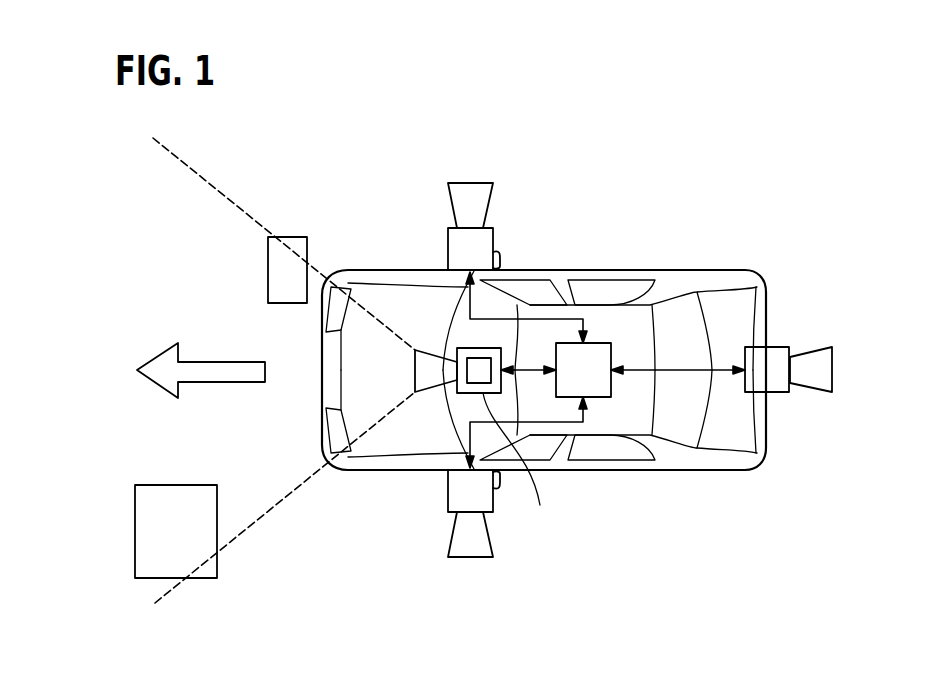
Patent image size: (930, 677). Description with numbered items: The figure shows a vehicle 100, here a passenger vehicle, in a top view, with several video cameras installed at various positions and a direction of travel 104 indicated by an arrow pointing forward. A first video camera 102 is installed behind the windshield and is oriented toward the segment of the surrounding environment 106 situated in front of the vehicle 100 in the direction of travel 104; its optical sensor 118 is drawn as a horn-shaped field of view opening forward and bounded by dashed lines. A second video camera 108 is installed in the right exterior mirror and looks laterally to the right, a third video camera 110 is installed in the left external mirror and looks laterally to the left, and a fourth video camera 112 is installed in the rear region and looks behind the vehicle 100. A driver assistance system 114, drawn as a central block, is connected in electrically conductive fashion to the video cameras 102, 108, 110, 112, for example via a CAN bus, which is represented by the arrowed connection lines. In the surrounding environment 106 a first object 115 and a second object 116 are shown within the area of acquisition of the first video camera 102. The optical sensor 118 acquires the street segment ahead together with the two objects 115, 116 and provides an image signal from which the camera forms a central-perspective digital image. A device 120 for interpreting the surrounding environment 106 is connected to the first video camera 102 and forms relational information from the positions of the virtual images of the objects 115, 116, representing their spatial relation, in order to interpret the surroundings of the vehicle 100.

The vehicle 100 is at (715, 270).
The first video camera 102 is at (483, 348).
The direction of travel 104 is at (211, 362).
The surrounding environment 106 is at (106, 246).
The second video camera 108 is at (448, 237).
The third video camera 110 is at (448, 493).
The fourth video camera 112 is at (783, 347).
The driver assistance system 114 is at (605, 343).
The first object 115 is at (278, 237).
The second object 116 is at (135, 527).
The optical sensor 118 is at (428, 342).
The device for interpreting a surrounding environment 120 is at (522, 469).